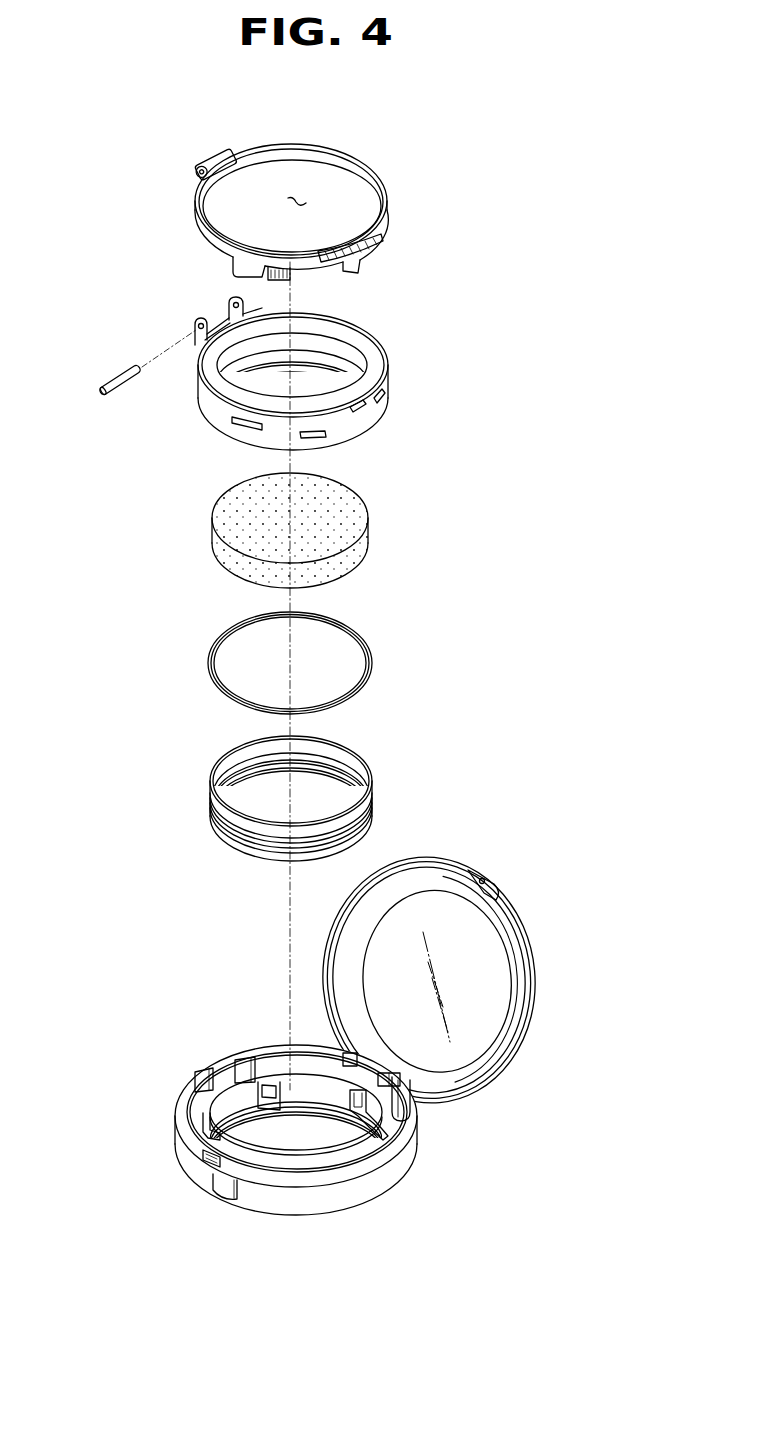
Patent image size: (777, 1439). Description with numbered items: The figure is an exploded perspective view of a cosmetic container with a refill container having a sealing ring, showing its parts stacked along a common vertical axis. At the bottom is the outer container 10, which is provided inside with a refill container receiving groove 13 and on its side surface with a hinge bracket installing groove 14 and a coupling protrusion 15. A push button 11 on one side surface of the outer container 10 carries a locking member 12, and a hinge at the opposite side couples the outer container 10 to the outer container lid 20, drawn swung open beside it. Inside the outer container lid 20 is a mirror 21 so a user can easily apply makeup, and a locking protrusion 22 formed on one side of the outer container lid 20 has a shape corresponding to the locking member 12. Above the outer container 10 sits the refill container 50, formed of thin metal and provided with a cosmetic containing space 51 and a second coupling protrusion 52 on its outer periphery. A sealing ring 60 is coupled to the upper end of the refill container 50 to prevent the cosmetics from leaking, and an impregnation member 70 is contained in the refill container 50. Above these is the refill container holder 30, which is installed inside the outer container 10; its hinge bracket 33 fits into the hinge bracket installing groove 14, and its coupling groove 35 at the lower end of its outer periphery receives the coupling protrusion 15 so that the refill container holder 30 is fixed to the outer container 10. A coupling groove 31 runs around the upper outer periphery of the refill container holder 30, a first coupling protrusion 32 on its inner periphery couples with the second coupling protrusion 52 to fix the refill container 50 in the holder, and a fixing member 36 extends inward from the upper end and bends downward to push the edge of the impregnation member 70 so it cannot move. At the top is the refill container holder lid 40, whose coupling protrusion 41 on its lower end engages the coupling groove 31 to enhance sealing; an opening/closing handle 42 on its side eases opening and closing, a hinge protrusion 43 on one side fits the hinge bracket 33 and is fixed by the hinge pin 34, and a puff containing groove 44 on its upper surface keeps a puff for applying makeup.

The outer container 10 is at (326, 1205).
The push button 11 is at (214, 1182).
The locking member 12 is at (205, 1156).
The refill container receiving groove 13 is at (323, 1140).
The hinge bracket installing groove 14 is at (214, 1081).
The coupling protrusion 15 is at (370, 1108).
The outer container lid 20 is at (522, 1040).
The mirror 21 is at (488, 993).
The locking protrusion 22 is at (490, 898).
The refill container holder 30 is at (411, 380).
The coupling groove 31 is at (242, 426).
The first coupling protrusion 32 is at (345, 365).
The hinge bracket 33 is at (196, 328).
The hinge pin 34 is at (95, 386).
The coupling groove 35 is at (328, 437).
The fixing member 36 is at (383, 380).
The refill container holder lid 40 is at (418, 190).
The coupling protrusion 41 is at (355, 268).
The opening/closing handle 42 is at (384, 236).
The hinge protrusion 43 is at (214, 161).
The puff containing groove 44 is at (300, 200).
The refill container 50 is at (402, 775).
The cosmetic containing space 51 is at (261, 796).
The second coupling protrusion 52 is at (370, 812).
The sealing ring 60 is at (372, 662).
The impregnation member 70 is at (366, 543).